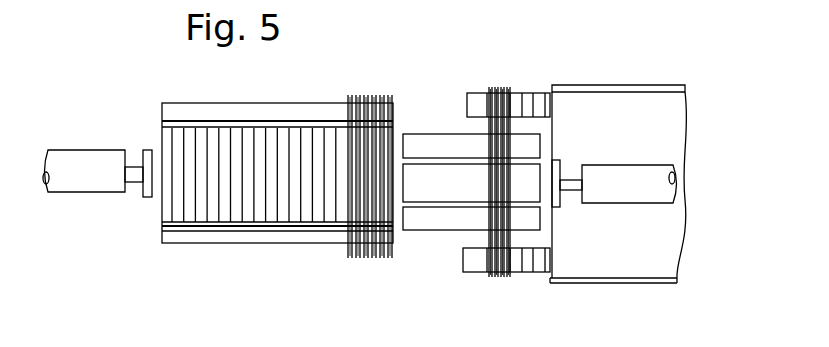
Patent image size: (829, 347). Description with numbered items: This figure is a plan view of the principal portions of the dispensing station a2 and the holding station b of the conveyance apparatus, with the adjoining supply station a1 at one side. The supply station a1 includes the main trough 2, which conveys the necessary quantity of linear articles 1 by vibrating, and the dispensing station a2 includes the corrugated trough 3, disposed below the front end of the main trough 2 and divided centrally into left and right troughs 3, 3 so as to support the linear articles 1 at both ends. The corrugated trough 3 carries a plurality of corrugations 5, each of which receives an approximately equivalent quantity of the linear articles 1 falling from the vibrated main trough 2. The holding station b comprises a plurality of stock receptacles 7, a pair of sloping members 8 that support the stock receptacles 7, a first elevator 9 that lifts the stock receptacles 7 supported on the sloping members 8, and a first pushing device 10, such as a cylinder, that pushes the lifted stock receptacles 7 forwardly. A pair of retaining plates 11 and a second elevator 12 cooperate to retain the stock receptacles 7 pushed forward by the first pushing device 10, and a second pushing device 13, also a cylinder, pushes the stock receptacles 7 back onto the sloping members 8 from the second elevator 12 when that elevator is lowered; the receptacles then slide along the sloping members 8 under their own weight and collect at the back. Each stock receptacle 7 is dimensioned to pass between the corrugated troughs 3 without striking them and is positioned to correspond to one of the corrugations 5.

The linear articles 1 is at (386, 94).
The main trough 2 is at (627, 88).
The corrugated trough 3 is at (472, 93).
The corrugations 5 is at (506, 90).
The stock receptacles 7 is at (160, 213).
The sloping members 8 is at (424, 136).
The first elevator 9 is at (425, 188).
The first pushing device 10 is at (609, 172).
The retaining plates 11 is at (230, 128).
The second elevator 12 is at (190, 104).
The second pushing device 13 is at (78, 160).
The holding station b is at (345, 89).
The supply station a1 is at (681, 82).
The dispensing station a2 is at (512, 281).